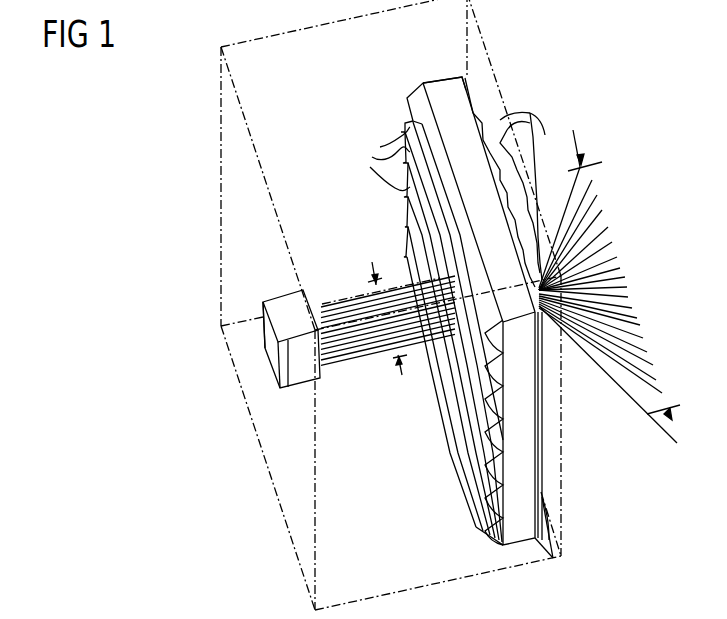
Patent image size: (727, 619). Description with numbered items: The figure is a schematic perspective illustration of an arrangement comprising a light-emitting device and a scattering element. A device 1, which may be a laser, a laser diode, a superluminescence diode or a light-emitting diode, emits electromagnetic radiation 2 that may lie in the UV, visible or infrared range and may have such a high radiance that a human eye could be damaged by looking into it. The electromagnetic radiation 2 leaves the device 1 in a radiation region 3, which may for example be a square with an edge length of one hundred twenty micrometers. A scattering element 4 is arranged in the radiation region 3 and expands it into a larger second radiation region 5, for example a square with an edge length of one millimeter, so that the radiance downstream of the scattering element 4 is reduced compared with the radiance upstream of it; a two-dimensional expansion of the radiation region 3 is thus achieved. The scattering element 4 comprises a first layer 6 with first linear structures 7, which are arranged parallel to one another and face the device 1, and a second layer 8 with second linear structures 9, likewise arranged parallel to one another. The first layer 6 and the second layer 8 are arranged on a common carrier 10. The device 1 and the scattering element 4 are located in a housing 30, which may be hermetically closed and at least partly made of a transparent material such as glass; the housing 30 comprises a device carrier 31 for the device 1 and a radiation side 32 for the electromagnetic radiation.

The device 1 is at (300, 365).
The electromagnetic radiation 2 is at (347, 303).
The radiation region 3 is at (360, 342).
The scattering element 4 is at (440, 88).
The second radiation region 5 is at (584, 290).
The first layer 6 is at (490, 530).
The first linear structures 7 is at (375, 159).
The second layer 8 is at (552, 550).
The second linear structures 9 is at (470, 113).
The common carrier 10 is at (457, 78).
The housing 30 is at (222, 240).
The device carrier 31 is at (268, 348).
The radiation side 32 is at (558, 460).